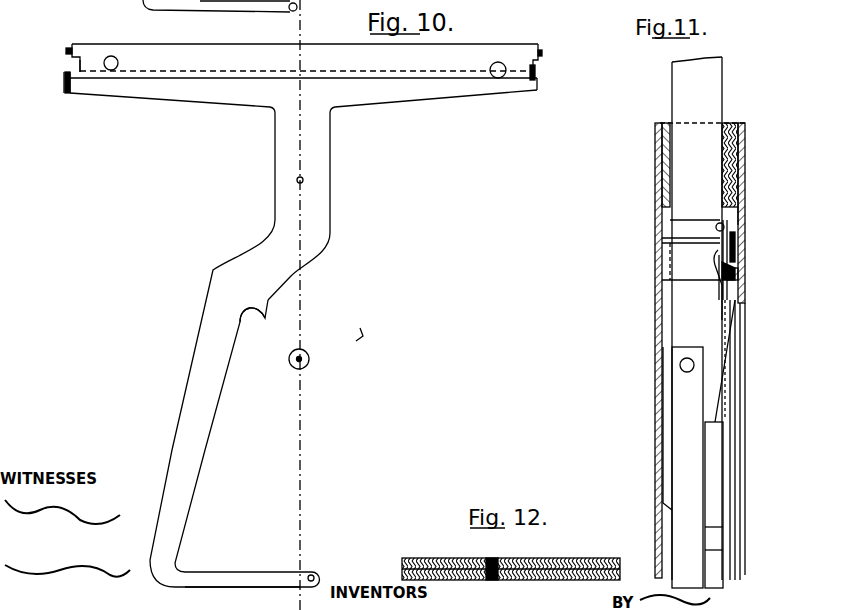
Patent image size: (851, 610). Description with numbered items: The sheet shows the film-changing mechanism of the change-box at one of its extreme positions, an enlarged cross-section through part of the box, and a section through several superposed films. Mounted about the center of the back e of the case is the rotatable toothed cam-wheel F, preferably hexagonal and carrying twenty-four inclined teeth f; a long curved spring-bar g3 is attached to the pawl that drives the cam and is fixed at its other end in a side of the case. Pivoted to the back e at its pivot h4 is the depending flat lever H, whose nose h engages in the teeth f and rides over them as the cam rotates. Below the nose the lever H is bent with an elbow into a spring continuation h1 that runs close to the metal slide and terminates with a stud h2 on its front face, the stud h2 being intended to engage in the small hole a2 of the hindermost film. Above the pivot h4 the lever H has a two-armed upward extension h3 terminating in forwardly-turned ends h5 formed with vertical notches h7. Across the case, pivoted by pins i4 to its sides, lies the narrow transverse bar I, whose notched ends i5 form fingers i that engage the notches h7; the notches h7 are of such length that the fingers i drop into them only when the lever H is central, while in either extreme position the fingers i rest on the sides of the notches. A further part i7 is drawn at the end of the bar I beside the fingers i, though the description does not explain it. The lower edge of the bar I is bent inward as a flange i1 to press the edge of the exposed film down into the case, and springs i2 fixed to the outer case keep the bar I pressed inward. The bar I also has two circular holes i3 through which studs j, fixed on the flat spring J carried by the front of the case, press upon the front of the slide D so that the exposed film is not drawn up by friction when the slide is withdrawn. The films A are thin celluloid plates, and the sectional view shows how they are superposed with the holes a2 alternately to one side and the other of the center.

In FIG. 10, the depending flat finger or lever H is at (225, 266).
In FIG. 10, the nose h is at (258, 310).
In FIG. 10, the elbow and continuation h1 is at (258, 577).
In FIG. 10, the stud h2 is at (316, 574).
In FIG. 10, the two-armed upward extension h3 is at (328, 72).
In FIG. 10, the pivot h4 is at (304, 180).
In FIG. 10, the forwardly-turned ends h5 is at (538, 88).
In FIG. 11, the forwardly-turned ends h5 is at (680, 260).
In FIG. 10, the vertical notches h7 is at (540, 75).
In FIG. 11, the vertical notches h7 is at (717, 268).
In FIG. 10, the rotatable toothed cam-wheel F is at (307, 348).
In FIG. 10, the inclined teeth f is at (346, 320).
In FIG. 10, the fingers i is at (65, 78).
In FIG. 11, the flange or rim i1 is at (722, 290).
In FIG. 11, the springs i2 is at (737, 280).
In FIG. 10, the circular holes i3 is at (506, 40).
In FIG. 10, the pins i4 is at (552, 53).
In FIG. 11, the pins i4 is at (738, 222).
In FIG. 10, the notched ends i5 is at (80, 62).
In FIG. 10, the clip i7 is at (64, 88).
In FIG. 11, the slide D is at (697, 318).
In FIG. 11, the back e is at (655, 315).
In FIG. 11, the studs j is at (716, 228).
In FIG. 11, the flat spring J is at (738, 232).
In FIG. 11, the narrow transverse bar I is at (735, 258).
In FIG. 11, the sensitized plates (films) A is at (715, 260).
In FIG. 12, the sensitized plates (films) A is at (511, 571).
In FIG. 11, the spring-bar g3 is at (680, 388).
In FIG. 12, the small hole a2 is at (496, 560).